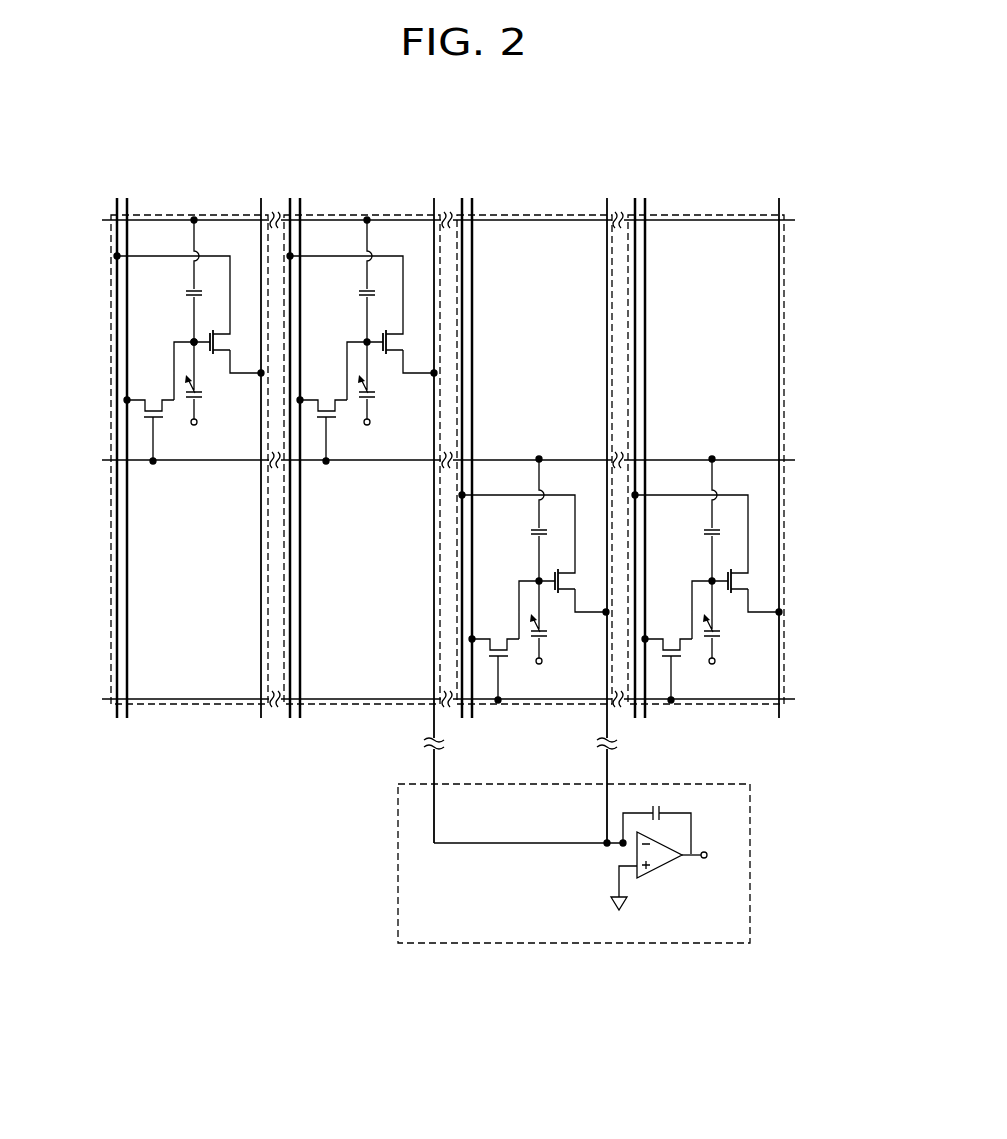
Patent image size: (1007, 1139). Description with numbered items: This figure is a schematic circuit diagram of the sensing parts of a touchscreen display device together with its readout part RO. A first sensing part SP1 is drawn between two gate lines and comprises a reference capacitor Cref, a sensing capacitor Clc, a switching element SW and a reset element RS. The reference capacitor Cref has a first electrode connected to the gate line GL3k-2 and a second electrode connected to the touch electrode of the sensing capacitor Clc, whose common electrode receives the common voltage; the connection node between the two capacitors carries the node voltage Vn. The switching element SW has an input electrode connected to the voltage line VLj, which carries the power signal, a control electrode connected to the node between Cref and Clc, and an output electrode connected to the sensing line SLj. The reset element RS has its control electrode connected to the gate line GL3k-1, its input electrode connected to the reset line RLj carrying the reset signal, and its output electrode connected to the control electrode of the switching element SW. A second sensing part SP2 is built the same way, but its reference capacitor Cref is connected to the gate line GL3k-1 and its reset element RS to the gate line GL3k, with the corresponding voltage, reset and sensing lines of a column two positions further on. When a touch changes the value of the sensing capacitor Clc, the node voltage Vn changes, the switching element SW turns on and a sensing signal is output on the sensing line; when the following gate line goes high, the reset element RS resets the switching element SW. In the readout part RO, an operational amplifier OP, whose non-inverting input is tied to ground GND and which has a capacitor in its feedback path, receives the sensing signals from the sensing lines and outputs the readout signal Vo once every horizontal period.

The (j)-th voltage line VLj is at (117, 198).
The (j)-th reset line RLj is at (127, 198).
The (j)-th sensing line SLj is at (261, 210).
The (3k-2)-th gate line GL3k-2 is at (416, 222).
The (3k-1)-th gate line GL3k-1 is at (416, 461).
The 3k gate line GL3k is at (422, 699).
The reference capacitor Cref is at (429, 399).
The switching element SW is at (497, 463).
The reset element RS is at (408, 540).
The sensing capacitor Clc is at (472, 503).
The node voltage Vn is at (194, 342).
The first sensing part SP1 is at (191, 707).
The second sensing part SP2 is at (543, 707).
The readout part RO is at (541, 863).
The operational amplifier OP is at (658, 867).
The ground GND is at (626, 918).
The readout signal Vo is at (709, 855).